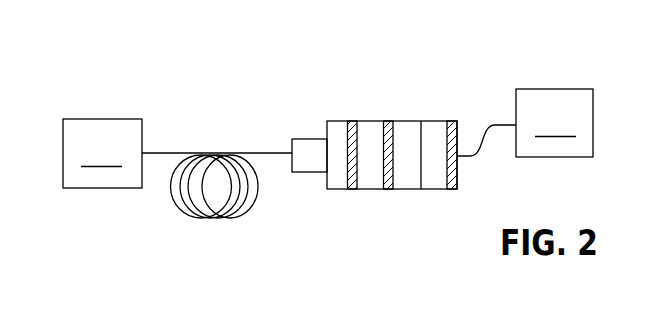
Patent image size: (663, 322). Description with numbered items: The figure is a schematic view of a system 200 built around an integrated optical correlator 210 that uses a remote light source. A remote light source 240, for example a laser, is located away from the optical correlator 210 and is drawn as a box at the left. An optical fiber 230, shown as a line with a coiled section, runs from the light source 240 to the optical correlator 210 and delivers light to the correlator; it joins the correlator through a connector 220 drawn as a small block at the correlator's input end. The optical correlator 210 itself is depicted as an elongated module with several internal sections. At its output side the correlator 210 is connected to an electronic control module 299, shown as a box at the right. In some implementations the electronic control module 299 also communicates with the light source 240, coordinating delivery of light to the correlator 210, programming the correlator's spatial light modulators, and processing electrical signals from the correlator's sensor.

The system 200 is at (117, 83).
The integrated optical correlator 210 is at (408, 104).
The connector 220 is at (305, 172).
The optical fiber 230 is at (168, 152).
The remote light source 240 is at (102, 153).
The electronic control module 299 is at (554, 123).